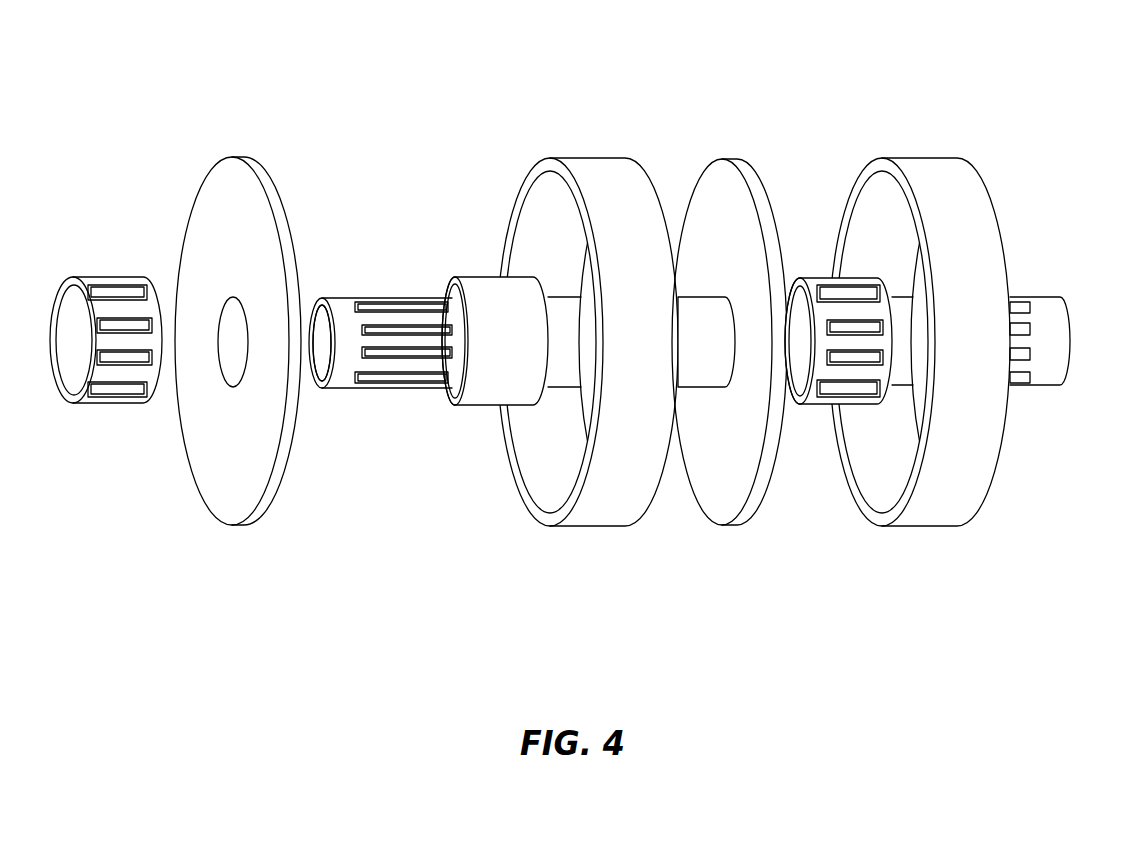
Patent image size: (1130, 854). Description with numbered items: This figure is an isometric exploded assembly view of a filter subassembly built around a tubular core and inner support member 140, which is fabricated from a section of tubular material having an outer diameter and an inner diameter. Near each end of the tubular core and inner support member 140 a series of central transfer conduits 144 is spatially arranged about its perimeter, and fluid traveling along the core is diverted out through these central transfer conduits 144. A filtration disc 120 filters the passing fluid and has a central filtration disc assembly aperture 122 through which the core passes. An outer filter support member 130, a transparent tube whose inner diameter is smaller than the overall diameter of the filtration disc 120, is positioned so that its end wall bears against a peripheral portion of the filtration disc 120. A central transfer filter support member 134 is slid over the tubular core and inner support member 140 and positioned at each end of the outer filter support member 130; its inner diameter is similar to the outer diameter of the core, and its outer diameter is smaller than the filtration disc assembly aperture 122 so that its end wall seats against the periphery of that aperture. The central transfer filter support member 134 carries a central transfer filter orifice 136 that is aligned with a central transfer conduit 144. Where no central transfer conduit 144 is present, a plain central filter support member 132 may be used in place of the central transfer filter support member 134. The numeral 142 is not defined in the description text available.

The filtration disc 120 is at (280, 213).
The filtration disc assembly aperture 122 is at (232, 342).
The outer filter support member 130 is at (627, 473).
The central filter support member 132 is at (511, 296).
The central transfer filter support member 134 is at (113, 283).
The central transfer filter orifice 136 is at (108, 393).
The tubular core and inner support member 140 is at (230, 108).
The shaft bore 142 is at (319, 342).
The central transfer conduit 144 is at (406, 305).